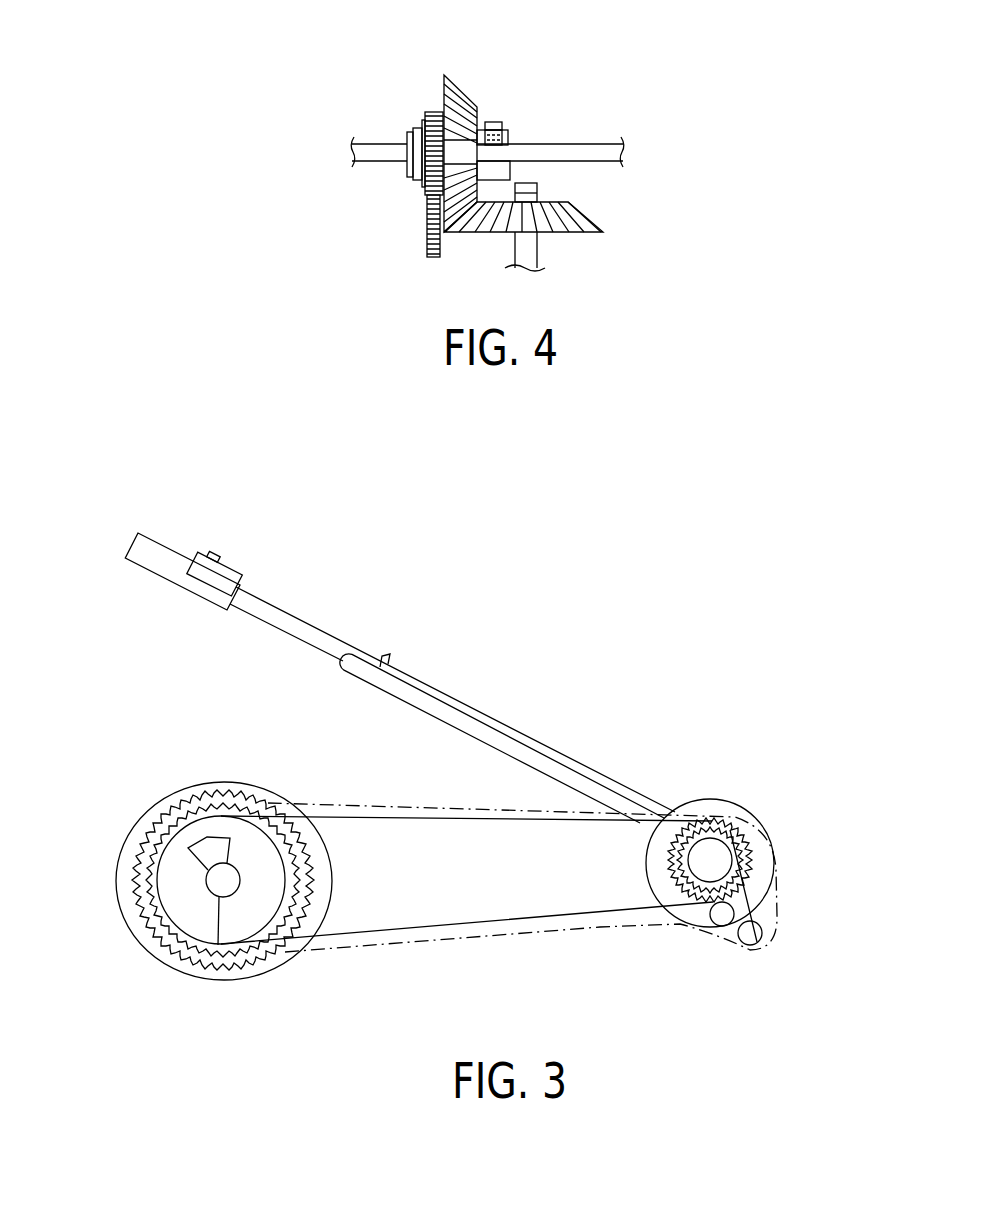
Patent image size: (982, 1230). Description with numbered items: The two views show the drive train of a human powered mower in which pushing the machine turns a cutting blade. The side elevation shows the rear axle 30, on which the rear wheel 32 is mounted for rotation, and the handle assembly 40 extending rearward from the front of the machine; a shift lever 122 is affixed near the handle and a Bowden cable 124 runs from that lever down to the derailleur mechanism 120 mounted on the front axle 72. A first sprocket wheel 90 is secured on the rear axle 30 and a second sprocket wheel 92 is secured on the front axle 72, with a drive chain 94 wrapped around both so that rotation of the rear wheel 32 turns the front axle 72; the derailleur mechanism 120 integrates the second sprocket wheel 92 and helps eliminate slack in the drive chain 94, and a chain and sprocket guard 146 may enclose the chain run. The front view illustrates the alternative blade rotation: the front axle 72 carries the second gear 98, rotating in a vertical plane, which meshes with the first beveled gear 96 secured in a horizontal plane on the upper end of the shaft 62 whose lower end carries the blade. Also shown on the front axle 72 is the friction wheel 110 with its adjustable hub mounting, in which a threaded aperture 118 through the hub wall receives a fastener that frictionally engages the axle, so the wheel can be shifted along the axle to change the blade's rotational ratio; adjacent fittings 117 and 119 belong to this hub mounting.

In FIG. 3, the rear axle 30 is at (218, 945).
In FIG. 3, the rear wheel 32 is at (292, 952).
In FIG. 3, the handle assembly 40 is at (336, 676).
In FIG. 4, the shaft 62 is at (538, 245).
In FIG. 4, the front axle 72 is at (603, 144).
In FIG. 3, the front axle 72 is at (722, 858).
In FIG. 3, the first sprocket wheel 90 is at (306, 838).
In FIG. 4, the second sprocket wheel 92 is at (422, 120).
In FIG. 3, the second sprocket wheel 92 is at (733, 823).
In FIG. 4, the drive chain 94 is at (434, 112).
In FIG. 3, the drive chain 94 is at (470, 822).
In FIG. 4, the first beveled gear 96 is at (588, 219).
In FIG. 4, the second gear 98 is at (462, 93).
In FIG. 3, the friction wheel 110 is at (768, 828).
In FIG. 4, the collar 117 is at (509, 137).
In FIG. 4, the threaded aperture 118 is at (503, 131).
In FIG. 4, the nut 119 is at (493, 122).
In FIG. 4, the derailleur mechanism 120 is at (426, 238).
In FIG. 3, the derailleur mechanism 120 is at (756, 942).
In FIG. 3, the shift lever 122 is at (222, 556).
In FIG. 3, the Bowden cable 124 is at (352, 646).
In FIG. 3, the chain and sprocket guard 146 is at (478, 937).